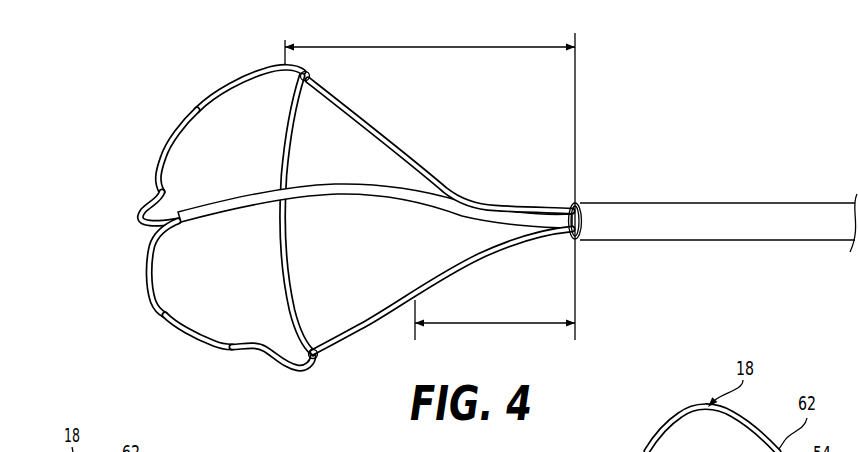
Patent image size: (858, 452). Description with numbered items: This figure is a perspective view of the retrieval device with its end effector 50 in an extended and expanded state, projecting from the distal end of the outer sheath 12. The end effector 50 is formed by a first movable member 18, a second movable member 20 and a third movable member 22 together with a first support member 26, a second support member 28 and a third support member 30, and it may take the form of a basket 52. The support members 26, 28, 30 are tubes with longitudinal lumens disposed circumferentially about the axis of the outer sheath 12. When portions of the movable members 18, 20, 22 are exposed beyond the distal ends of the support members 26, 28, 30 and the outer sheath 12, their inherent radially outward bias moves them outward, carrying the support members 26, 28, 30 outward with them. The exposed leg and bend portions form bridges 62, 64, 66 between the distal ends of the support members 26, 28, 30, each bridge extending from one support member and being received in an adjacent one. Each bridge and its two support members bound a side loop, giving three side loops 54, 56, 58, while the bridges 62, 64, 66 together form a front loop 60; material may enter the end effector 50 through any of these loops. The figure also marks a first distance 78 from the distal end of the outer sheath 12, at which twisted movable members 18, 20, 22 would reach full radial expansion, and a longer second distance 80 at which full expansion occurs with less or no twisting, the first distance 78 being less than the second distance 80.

The outer sheath 12 is at (810, 203).
The first movable member 18 is at (200, 90).
The second movable member 20 is at (226, 353).
The third movable member 22 is at (316, 70).
The first support member 26 is at (395, 127).
The second support member 28 is at (238, 213).
The third support member 30 is at (331, 354).
The end effector 50 is at (472, 226).
The basket 52 is at (217, 226).
The side loop 54 is at (228, 115).
The side loop 56 is at (442, 311).
The side loop 58 is at (220, 295).
The front loop 60 is at (183, 185).
The bridge 62 is at (180, 126).
The bridge 64 is at (200, 339).
The bridge 66 is at (290, 259).
The first distance 78 is at (490, 327).
The second distance 80 is at (431, 46).